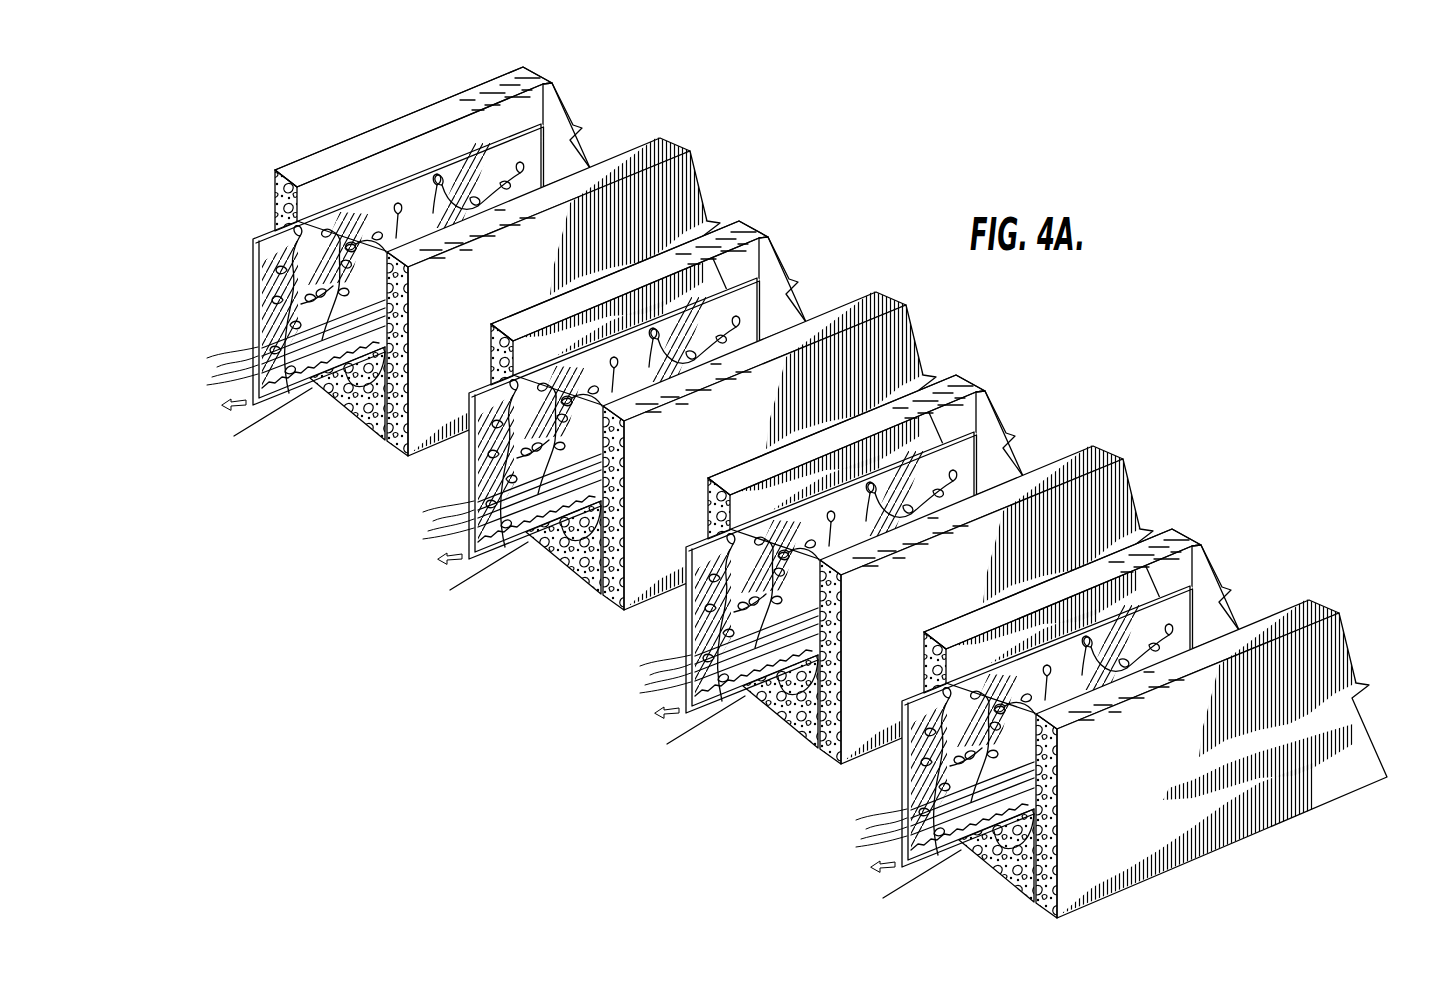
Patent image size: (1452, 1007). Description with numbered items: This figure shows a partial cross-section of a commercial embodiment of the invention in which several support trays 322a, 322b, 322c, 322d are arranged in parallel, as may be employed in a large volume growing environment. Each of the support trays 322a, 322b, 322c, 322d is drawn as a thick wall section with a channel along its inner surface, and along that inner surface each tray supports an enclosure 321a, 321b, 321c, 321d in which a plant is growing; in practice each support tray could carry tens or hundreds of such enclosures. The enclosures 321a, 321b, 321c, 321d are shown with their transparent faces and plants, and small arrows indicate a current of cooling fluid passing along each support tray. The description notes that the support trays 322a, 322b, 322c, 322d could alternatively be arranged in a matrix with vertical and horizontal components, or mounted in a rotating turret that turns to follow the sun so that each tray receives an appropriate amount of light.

The enclosure 321a is at (275, 280).
The support tray 322a is at (617, 232).
The enclosure 321b is at (495, 450).
The support tray 322b is at (820, 387).
The enclosure 321c is at (715, 608).
The support tray 322c is at (1035, 542).
The enclosure 321d is at (942, 760).
The support tray 322d is at (1223, 727).